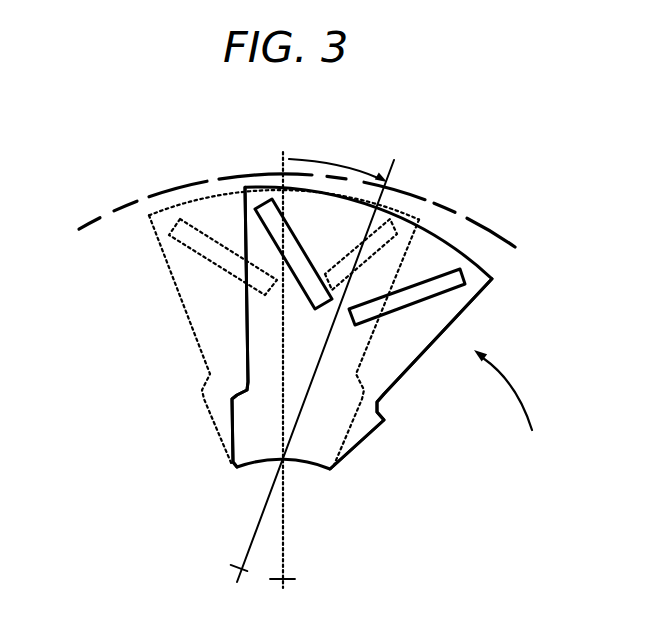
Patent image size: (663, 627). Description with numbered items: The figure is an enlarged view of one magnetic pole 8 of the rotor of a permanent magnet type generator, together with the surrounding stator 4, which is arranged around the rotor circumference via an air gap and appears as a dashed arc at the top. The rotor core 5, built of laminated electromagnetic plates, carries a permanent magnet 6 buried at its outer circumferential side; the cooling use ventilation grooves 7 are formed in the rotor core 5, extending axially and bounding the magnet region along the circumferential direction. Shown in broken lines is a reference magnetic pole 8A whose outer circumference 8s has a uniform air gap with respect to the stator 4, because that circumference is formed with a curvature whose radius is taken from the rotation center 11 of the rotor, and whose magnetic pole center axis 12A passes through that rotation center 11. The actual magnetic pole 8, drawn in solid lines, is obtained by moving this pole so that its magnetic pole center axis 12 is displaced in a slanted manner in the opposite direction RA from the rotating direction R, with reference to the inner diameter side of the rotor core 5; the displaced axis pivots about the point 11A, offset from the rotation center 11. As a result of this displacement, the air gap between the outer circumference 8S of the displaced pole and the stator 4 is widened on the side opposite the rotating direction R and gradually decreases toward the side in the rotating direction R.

The stator 4 is at (88, 222).
The rotor core 5 is at (245, 423).
The permanent magnet 6 is at (441, 286).
The cooling use ventilation groove 7 is at (403, 372).
The magnetic pole 8 is at (425, 247).
The magnetic pole 8A is at (220, 203).
The outer circumference 8s is at (170, 207).
The outer circumference 8S is at (472, 258).
The rotation center 11 is at (283, 577).
The eccentric axis 11A is at (238, 567).
The magnetic pole center axis 12 is at (264, 502).
The magnetic pole center axis 12A is at (281, 515).
The rotating direction R is at (506, 404).
The opposite direction RA is at (338, 158).